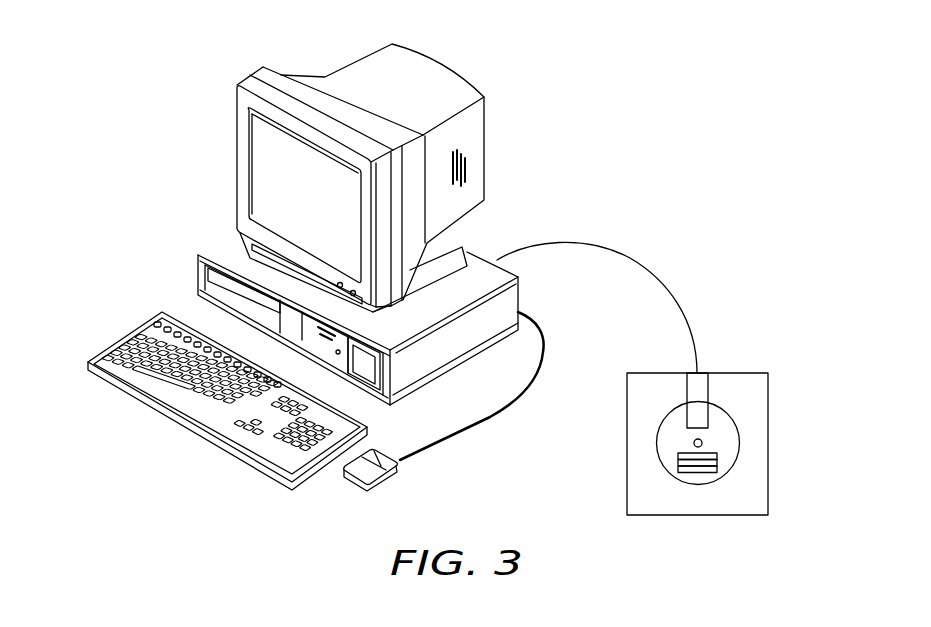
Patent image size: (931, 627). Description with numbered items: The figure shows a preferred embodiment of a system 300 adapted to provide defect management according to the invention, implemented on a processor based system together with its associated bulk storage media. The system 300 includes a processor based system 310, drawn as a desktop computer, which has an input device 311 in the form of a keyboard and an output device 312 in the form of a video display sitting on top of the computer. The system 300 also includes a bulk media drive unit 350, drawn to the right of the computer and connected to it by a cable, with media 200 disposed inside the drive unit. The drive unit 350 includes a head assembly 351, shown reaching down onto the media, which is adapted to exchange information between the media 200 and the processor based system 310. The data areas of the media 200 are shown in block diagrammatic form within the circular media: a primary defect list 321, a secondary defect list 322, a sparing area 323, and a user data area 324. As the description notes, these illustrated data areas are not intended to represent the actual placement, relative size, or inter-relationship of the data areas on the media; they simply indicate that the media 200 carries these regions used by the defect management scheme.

The system 300 is at (706, 103).
The processor based system 310 is at (196, 275).
The input device 311 is at (181, 423).
The output device 312 is at (237, 143).
The bulk media drive unit 350 is at (733, 373).
The head assembly 351 is at (687, 383).
The media 200 is at (657, 447).
The primary defect list 321 is at (738, 447).
The secondary defect list 322 is at (717, 460).
The sparing area 323 is at (678, 463).
The user data area 324 is at (698, 473).